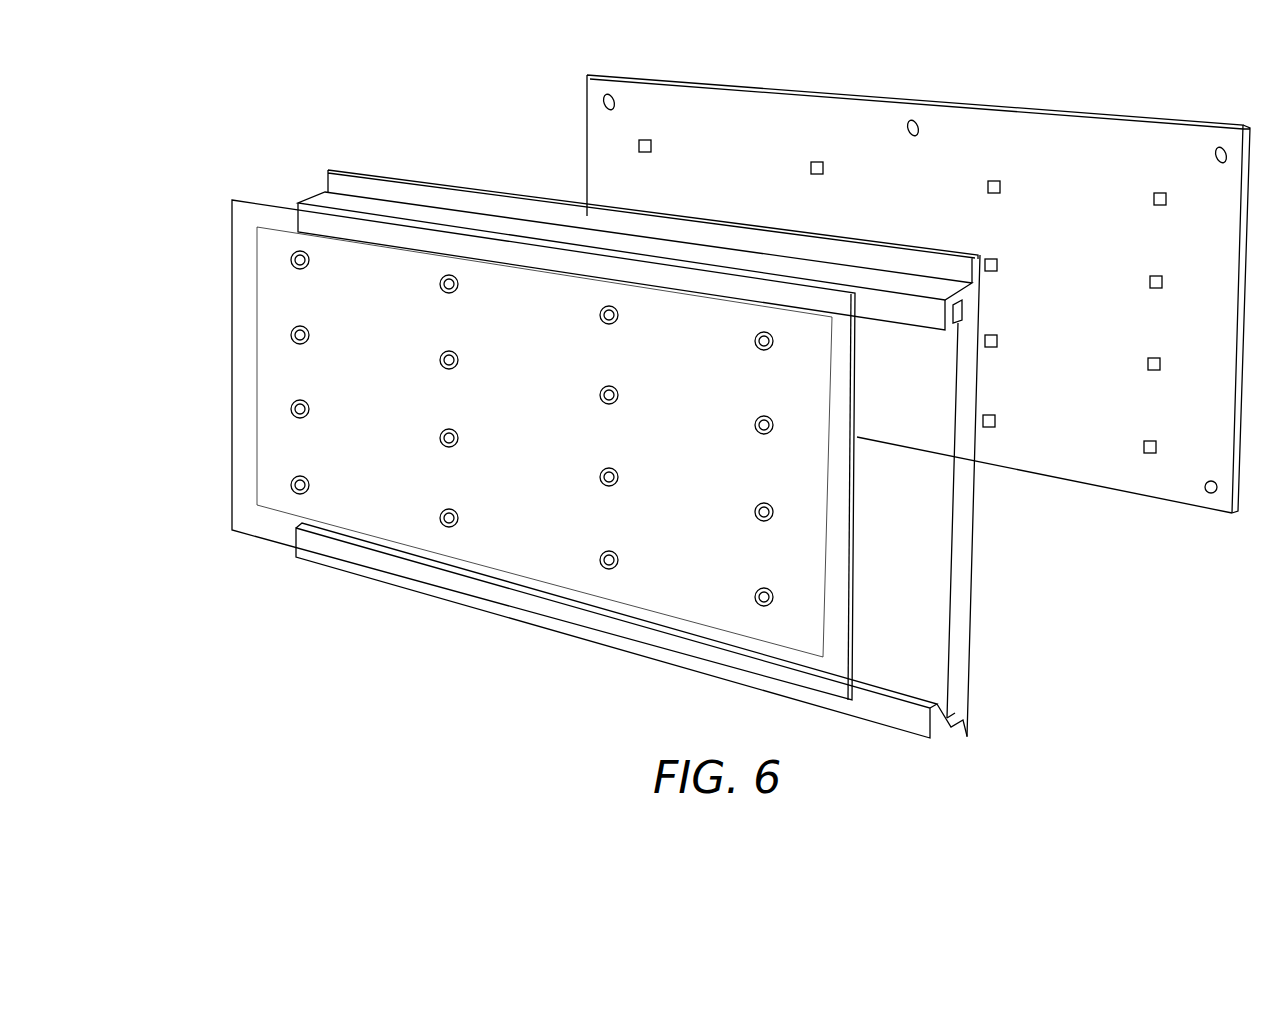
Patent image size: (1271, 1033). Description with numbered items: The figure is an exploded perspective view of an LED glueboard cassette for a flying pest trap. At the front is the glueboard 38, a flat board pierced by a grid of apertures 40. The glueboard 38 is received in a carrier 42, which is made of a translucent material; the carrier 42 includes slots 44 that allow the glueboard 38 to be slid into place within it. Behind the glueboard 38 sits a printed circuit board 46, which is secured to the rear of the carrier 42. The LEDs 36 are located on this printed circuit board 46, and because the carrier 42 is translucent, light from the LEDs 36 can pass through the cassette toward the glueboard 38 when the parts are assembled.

The LEDs 36 is at (651, 148).
The glueboard 38 is at (240, 516).
The apertures 40 is at (309, 258).
The carrier 42 is at (963, 683).
The slots 44 is at (963, 312).
The printed circuit board 46 is at (1095, 483).